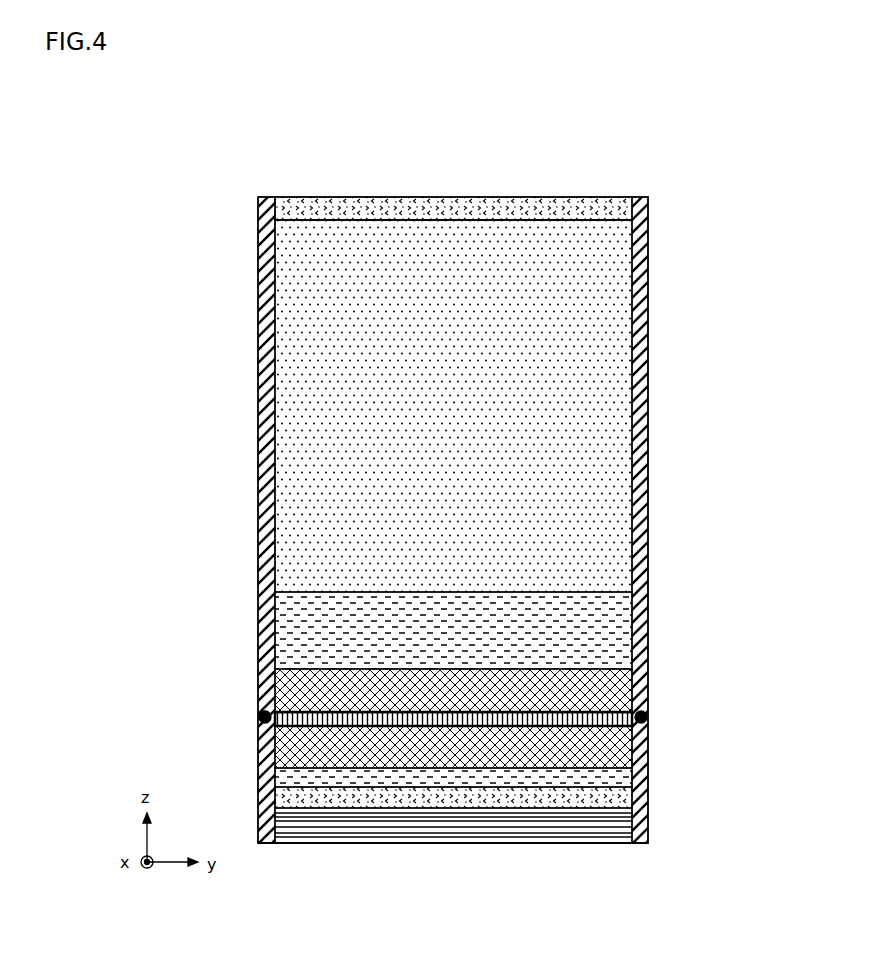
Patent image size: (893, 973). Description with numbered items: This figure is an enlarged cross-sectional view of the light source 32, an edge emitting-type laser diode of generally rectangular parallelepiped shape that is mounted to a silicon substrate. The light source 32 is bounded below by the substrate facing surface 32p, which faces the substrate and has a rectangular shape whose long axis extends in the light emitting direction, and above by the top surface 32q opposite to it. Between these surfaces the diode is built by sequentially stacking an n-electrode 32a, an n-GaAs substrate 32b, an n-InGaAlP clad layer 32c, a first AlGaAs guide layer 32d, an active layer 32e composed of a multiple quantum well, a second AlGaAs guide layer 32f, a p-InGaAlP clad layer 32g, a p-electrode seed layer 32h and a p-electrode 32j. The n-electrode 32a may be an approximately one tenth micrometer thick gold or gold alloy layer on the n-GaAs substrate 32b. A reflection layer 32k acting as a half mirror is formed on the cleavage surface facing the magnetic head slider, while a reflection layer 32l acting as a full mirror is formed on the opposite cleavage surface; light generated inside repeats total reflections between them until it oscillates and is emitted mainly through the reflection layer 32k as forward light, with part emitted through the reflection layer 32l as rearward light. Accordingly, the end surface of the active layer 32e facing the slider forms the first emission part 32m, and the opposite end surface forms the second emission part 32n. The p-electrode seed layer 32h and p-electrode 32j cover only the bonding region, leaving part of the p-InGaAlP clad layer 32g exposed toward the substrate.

The light source 32 is at (493, 177).
The n-electrode 32a is at (622, 213).
The n-GaAs substrate 32b is at (620, 377).
The n-InGaAlP clad layer 32c is at (615, 615).
The first AlGaAs guide layer 32d is at (628, 695).
The active layer 32e is at (642, 717).
The second AlGaAs guide layer 32f is at (615, 750).
The p-InGaAlP clad layer 32g is at (615, 778).
The p-electrode seed layer 32h is at (615, 800).
The p-electrode 32j is at (615, 828).
The reflection layer (half mirror) 32k is at (258, 302).
The reflection layer (full mirror) 32l is at (648, 312).
The first emission part 32m is at (259, 714).
The second emission part 32n is at (645, 719).
The substrate facing surface 32p is at (462, 843).
The top surface 32q is at (401, 197).